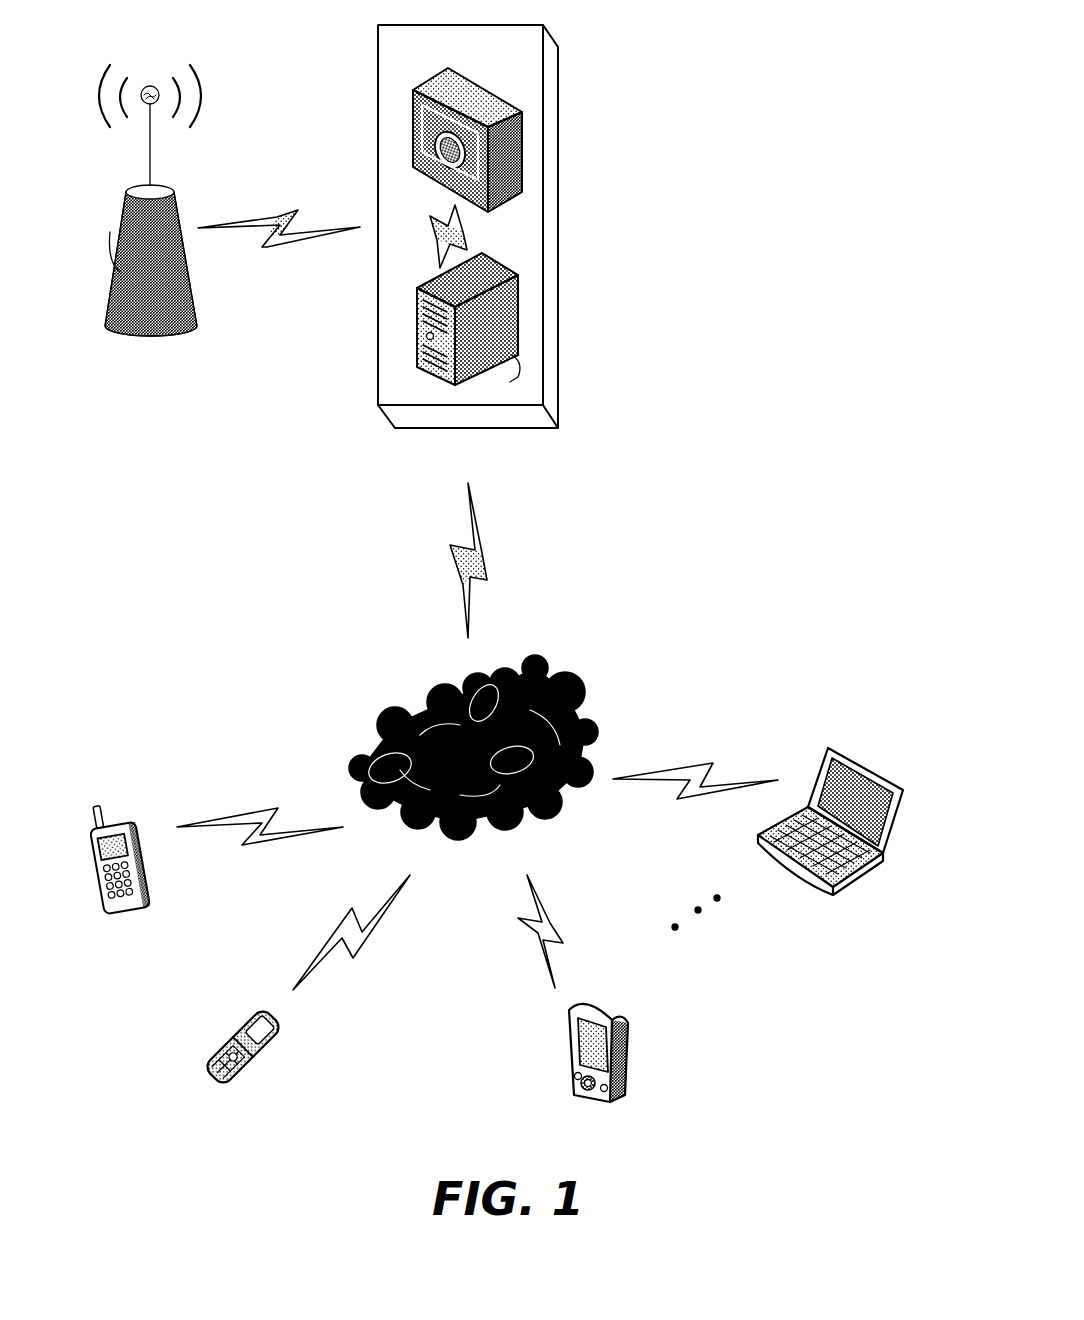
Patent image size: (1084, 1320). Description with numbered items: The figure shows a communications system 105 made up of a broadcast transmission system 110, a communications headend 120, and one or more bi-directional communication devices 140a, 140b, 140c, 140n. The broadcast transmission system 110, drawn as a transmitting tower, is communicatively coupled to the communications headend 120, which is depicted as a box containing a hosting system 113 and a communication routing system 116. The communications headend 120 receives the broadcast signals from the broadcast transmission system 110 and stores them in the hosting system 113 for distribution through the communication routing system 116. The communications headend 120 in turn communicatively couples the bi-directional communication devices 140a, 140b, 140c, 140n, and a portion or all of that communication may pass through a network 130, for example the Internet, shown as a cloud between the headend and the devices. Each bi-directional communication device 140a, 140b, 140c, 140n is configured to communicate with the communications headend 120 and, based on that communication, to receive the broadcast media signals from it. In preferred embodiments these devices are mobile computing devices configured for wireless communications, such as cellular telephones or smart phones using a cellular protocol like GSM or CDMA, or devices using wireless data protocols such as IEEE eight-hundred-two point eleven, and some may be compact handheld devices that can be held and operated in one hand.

The communications system 105 is at (908, 1125).
The broadcast transmission system 110 is at (180, 333).
The hosting system 113 is at (515, 310).
The communication routing system 116 is at (518, 138).
The communications headend 120 is at (558, 230).
The network 130 is at (557, 670).
The bi-directional communication device 140a is at (123, 915).
The bi-directional communication device 140b is at (270, 1047).
The bi-directional communication device 140c is at (613, 1008).
The bi-directional communication device 140n is at (848, 758).